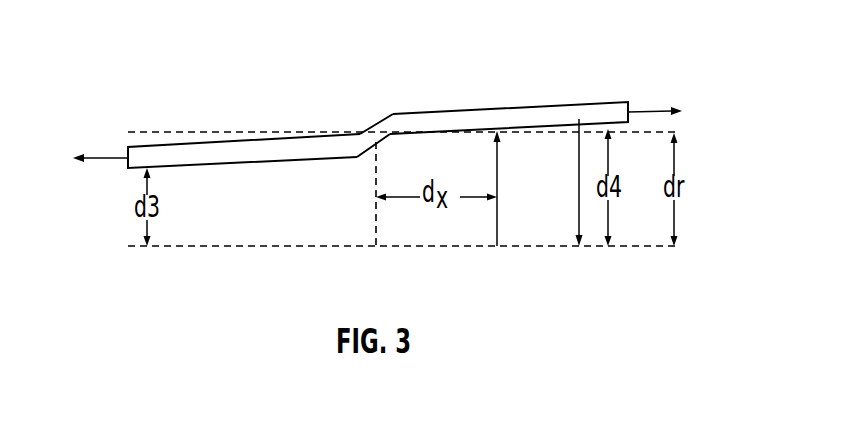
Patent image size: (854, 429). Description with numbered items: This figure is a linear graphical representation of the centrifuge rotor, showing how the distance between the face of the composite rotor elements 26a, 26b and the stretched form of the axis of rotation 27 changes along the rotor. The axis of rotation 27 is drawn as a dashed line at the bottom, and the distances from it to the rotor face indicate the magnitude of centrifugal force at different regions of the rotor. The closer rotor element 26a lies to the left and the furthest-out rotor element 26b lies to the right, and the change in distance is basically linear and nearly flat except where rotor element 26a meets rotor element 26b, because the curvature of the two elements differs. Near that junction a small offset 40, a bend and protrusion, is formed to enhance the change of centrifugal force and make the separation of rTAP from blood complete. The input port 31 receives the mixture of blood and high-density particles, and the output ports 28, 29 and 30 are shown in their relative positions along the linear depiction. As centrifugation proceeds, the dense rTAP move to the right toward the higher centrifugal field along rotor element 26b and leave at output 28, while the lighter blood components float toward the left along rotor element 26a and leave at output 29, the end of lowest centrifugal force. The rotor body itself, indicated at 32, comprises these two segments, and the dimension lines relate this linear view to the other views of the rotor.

The rotor element 26a is at (192, 164).
The rotor element 26b is at (565, 127).
The axis of rotation 27 is at (647, 248).
The output port 28 is at (645, 110).
The output port 29 is at (98, 157).
The output port 30 is at (579, 212).
The input port 31 is at (497, 213).
The airfoil section 32 is at (378, 146).
The offset 40 is at (381, 142).